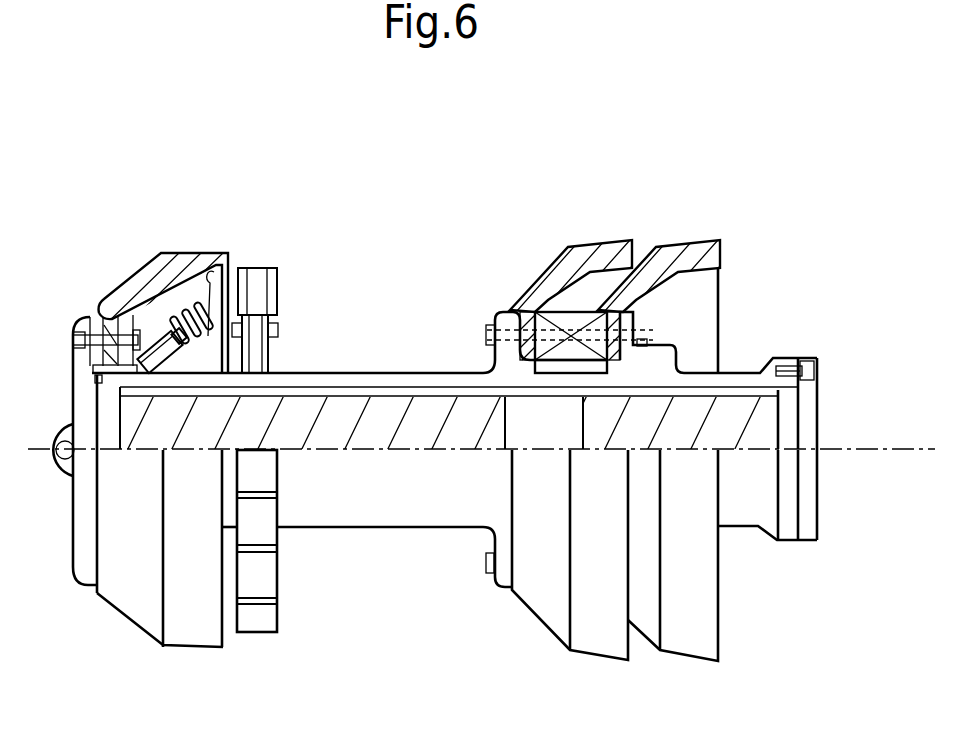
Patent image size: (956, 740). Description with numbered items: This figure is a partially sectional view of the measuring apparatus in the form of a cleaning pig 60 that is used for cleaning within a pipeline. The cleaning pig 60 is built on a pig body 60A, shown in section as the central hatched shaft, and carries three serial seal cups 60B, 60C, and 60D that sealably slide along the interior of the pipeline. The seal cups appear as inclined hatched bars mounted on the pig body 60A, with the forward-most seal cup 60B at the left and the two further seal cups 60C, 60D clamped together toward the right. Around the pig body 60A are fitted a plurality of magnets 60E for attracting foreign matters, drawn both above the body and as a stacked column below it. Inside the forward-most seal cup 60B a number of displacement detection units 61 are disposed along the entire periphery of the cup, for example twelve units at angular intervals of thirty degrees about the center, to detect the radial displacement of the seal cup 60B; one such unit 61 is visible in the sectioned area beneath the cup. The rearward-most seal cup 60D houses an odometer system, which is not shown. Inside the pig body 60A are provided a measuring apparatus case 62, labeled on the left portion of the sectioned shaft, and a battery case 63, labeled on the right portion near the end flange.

The cleaning pig 60 is at (445, 224).
The pig body 60A is at (392, 373).
The forward-most seal cup 60B is at (190, 252).
The seal cup 60C is at (608, 245).
The rearward-most seal cup 60D is at (707, 252).
The magnets 60E is at (260, 278).
The displacement detection units 61 is at (174, 307).
The measuring apparatus case 62 is at (348, 410).
The battery case 63 is at (725, 407).